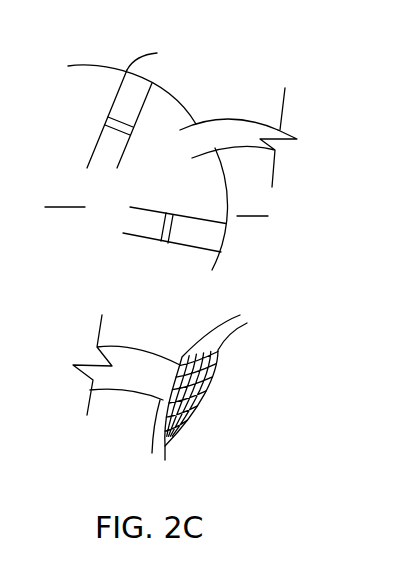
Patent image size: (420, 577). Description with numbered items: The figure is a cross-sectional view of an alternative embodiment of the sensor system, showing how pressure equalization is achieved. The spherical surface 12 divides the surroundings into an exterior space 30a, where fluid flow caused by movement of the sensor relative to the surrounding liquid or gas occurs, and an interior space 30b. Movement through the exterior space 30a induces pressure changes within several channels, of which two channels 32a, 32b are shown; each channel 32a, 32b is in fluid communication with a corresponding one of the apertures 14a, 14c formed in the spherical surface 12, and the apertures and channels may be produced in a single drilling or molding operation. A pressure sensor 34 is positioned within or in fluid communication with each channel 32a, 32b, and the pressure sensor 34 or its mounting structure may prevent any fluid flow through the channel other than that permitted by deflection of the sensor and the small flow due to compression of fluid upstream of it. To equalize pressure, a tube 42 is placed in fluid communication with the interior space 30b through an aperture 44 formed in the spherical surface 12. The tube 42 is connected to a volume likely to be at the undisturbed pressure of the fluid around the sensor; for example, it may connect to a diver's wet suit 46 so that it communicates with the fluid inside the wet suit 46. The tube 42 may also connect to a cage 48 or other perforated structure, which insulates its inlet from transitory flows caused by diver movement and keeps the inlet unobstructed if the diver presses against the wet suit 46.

The spherical surface 12 is at (70, 64).
The aperture 14a is at (157, 53).
The aperture 14c is at (222, 242).
The exterior space 30a is at (252, 206).
The interior space 30b is at (65, 198).
The channel 32a is at (125, 92).
The channel 32b is at (192, 242).
The pressure sensor 34 is at (105, 126).
The tube 42 is at (240, 128).
The aperture 44 is at (195, 119).
The diver's wet suit 46 is at (155, 426).
The cage 48 is at (207, 398).